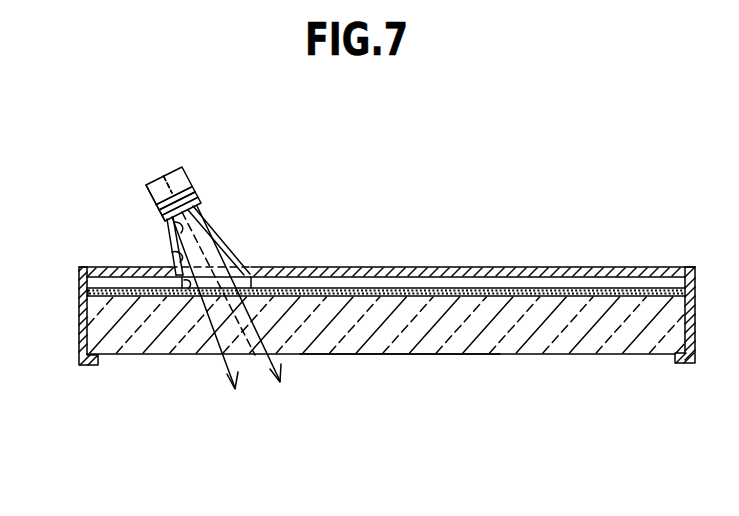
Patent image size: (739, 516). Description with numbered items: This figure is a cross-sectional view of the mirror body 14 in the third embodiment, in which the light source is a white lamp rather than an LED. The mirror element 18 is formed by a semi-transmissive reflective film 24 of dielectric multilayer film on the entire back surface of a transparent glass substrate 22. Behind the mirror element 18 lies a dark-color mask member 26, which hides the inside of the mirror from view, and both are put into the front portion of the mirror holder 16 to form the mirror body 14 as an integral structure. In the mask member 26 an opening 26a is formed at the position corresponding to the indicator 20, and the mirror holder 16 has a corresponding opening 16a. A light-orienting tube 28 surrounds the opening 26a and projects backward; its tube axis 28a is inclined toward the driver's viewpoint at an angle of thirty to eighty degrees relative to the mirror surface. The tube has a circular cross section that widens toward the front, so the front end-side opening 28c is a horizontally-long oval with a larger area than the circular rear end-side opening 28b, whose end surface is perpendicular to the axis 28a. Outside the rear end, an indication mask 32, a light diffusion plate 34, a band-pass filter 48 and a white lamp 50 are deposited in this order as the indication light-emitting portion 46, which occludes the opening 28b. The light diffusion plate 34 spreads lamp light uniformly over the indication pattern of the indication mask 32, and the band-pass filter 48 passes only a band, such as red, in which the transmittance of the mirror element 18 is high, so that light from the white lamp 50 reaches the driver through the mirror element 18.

The mirror body 14 is at (366, 304).
The mirror holder 16 is at (373, 272).
The opening 16a is at (250, 268).
The mirror element 18 is at (544, 358).
The indicator 20 is at (253, 366).
The transparent glass substrate 22 is at (407, 338).
The semi-transmissive reflective film 24 is at (495, 291).
The mask member 26 is at (433, 287).
The opening 26a is at (196, 296).
The light-orienting tube 28 is at (167, 180).
The tube axis 28a is at (160, 166).
The rear end-side opening 28b is at (172, 225).
The front end-side opening 28c is at (178, 260).
The indication mask 32 is at (202, 204).
The light diffusion plate 34 is at (199, 194).
The indication light-emitting portion 46 is at (162, 224).
The band-pass filter 48 is at (193, 186).
The white lamp 50 is at (187, 171).